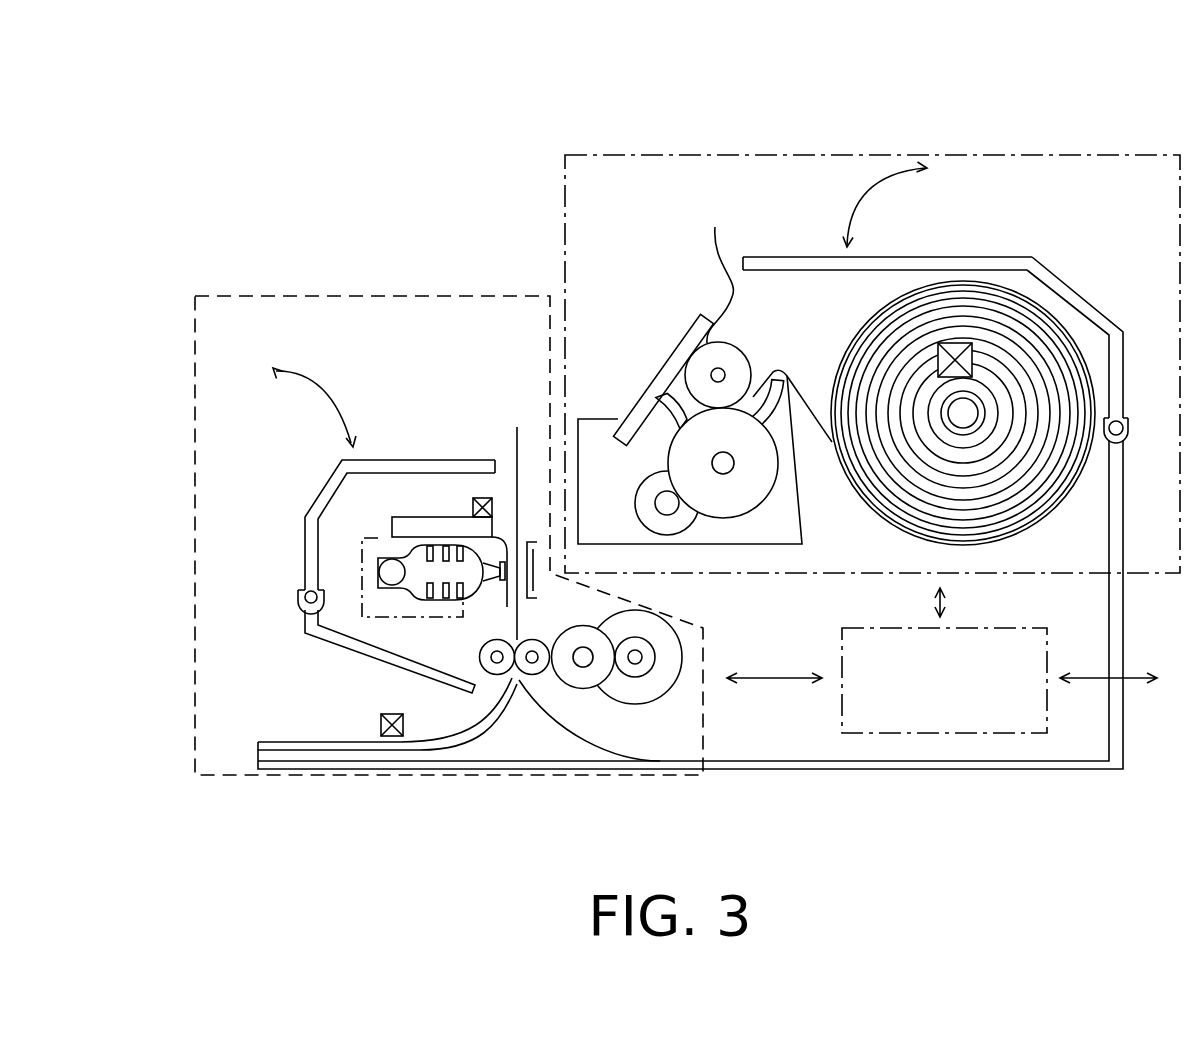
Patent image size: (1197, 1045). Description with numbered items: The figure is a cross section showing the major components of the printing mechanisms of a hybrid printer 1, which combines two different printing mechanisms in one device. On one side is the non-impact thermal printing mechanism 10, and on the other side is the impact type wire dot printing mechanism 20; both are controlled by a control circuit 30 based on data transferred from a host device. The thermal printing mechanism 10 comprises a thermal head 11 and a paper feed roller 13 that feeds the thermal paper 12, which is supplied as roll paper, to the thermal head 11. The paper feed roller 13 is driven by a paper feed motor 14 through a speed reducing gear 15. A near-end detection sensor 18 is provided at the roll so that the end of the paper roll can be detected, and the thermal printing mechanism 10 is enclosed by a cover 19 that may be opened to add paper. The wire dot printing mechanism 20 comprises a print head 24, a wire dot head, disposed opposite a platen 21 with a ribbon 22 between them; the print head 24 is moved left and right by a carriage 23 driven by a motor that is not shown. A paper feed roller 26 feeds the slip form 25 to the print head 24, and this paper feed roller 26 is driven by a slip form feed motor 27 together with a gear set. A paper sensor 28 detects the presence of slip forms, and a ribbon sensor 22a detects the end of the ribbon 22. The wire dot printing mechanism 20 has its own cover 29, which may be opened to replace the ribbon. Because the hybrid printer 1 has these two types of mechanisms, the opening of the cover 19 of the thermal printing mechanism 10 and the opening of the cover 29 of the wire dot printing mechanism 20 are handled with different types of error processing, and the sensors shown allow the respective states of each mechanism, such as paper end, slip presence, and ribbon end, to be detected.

The hybrid printer 1 is at (1030, 778).
The thermal printing mechanism 10 is at (1081, 190).
The thermal head 11 is at (688, 343).
The thermal paper 12 is at (1063, 353).
The paper feed roller 13 is at (735, 367).
The paper feed motor 14 is at (675, 522).
The speed reducing gear 15 is at (750, 502).
The near-end detection sensor 18 is at (937, 358).
The cover 19 is at (932, 265).
The wire dot printing mechanism 20 is at (347, 322).
The platen 21 is at (533, 570).
The ribbon 22 is at (503, 597).
The ribbon sensor 22a is at (490, 497).
The carriage 23 is at (362, 572).
The print head 24 is at (422, 600).
The slip form 25 is at (395, 742).
The paper feed roller 26 is at (522, 678).
The slip form feed motor 27 is at (640, 712).
The paper sensor 28 is at (380, 717).
The cover 29 is at (327, 490).
The control circuit 30 is at (1020, 673).